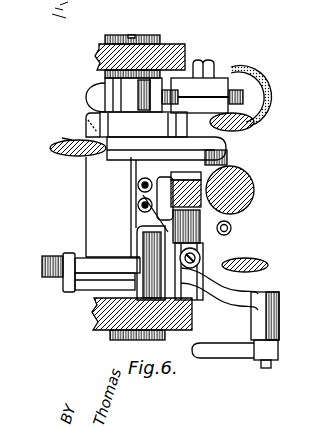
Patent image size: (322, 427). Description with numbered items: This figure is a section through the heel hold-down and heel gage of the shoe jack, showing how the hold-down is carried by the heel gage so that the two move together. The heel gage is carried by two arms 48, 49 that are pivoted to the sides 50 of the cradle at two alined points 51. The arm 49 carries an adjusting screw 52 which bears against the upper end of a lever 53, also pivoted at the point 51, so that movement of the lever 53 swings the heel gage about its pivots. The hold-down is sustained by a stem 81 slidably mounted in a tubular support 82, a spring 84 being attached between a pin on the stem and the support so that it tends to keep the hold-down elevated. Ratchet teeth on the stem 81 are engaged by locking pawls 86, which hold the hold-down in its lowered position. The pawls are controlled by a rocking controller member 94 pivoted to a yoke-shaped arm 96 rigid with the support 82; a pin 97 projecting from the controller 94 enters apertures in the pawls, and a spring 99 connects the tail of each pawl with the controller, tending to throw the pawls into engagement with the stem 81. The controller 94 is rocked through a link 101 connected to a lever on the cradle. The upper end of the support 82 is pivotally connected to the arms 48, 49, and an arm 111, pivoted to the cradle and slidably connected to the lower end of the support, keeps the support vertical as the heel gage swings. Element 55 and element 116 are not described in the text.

The arm of the heel gage 48 is at (258, 259).
The arm of the heel gage 49 is at (256, 116).
The sides of the cradle 50 is at (99, 52).
The alined pivot points 51 is at (133, 38).
The adjusting screw 52 is at (231, 93).
The lever 53 is at (110, 92).
The pivot bolt 55 is at (65, 283).
The stem 81 is at (252, 189).
The tubular support 82 is at (244, 174).
The spring 84 is at (232, 227).
The locking pawls 86 is at (160, 197).
The rocking controller member 94 is at (150, 213).
The yoke-shaped arm 96 is at (143, 247).
The pin 97 is at (222, 162).
The spring 99 is at (138, 184).
The link 101 is at (239, 350).
The arm 111 is at (62, 138).
The edge 116 is at (88, 120).